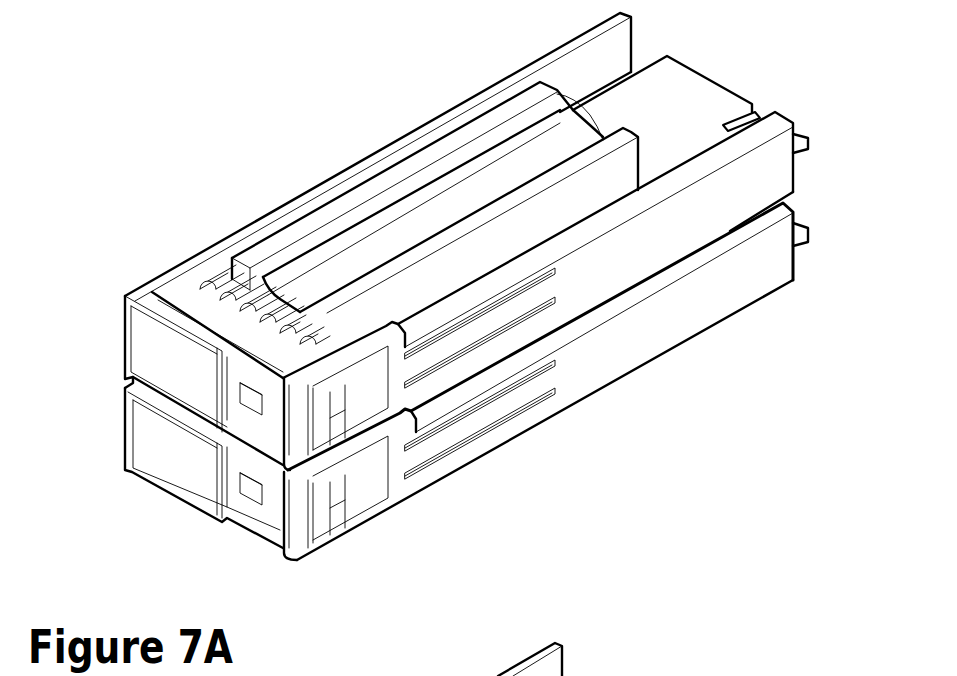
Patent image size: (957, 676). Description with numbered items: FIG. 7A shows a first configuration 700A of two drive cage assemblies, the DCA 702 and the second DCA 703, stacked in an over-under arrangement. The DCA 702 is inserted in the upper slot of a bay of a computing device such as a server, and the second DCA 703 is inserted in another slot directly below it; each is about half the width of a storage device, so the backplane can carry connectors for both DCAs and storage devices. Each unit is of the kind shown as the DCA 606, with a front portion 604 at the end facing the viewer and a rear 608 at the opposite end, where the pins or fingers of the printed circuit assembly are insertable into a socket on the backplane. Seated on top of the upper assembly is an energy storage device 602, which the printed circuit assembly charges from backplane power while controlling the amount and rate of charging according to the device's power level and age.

The first configuration 700A is at (464, 52).
The DCA 702 is at (142, 335).
The second DCA 703 is at (142, 418).
The energy storage device 602 is at (367, 230).
The front portion 604 is at (142, 371).
The DCA 606 is at (647, 230).
The rear 608 is at (688, 82).